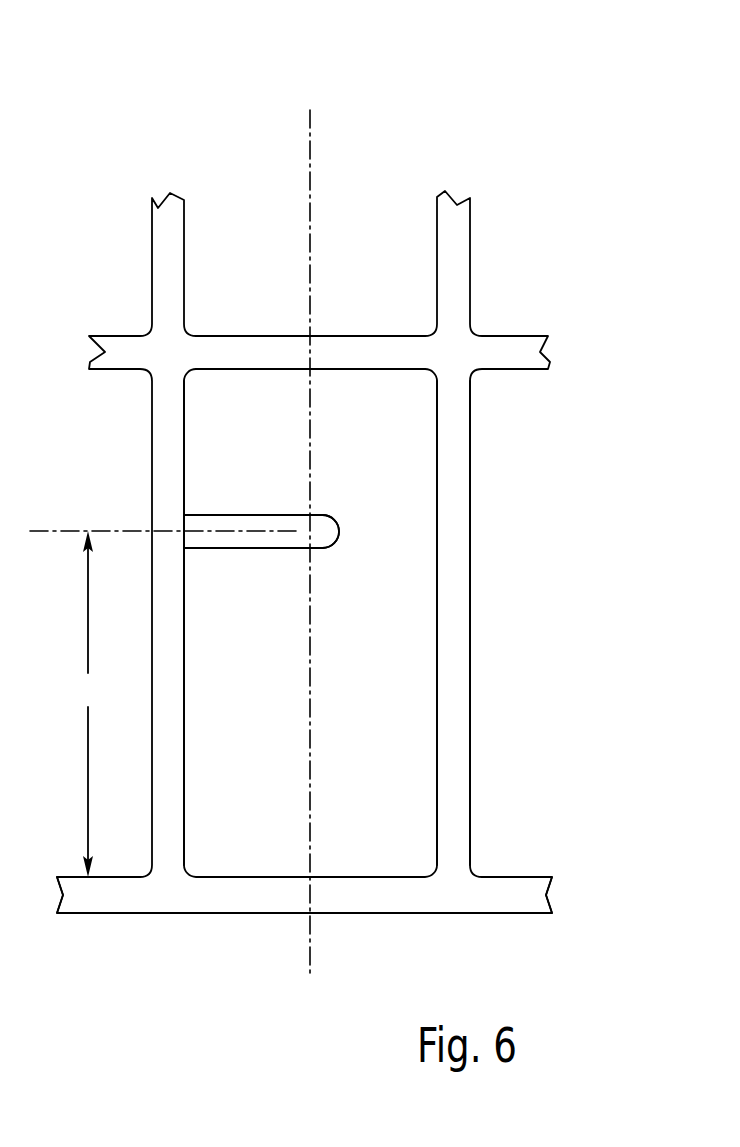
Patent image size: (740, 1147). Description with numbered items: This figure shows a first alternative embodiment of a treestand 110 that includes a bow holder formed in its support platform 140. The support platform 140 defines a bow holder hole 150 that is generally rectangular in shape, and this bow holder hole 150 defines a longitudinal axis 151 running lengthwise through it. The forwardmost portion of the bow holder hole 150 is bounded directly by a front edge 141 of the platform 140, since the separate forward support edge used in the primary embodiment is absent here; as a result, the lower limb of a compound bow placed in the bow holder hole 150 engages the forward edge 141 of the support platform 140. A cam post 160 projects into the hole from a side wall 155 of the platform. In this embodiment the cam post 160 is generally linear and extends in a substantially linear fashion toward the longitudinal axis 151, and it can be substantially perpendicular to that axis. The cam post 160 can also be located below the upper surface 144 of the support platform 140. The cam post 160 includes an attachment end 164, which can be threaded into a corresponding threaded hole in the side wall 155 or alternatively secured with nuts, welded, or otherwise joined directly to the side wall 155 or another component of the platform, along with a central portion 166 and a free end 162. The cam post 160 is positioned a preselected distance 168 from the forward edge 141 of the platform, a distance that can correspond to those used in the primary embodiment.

The treestand 110 is at (473, 143).
The support platform 140 is at (472, 535).
The front edge of the platform 141 is at (200, 895).
The upper surface of the support platform 144 is at (443, 352).
The bow holder hole 150 is at (388, 673).
The longitudinal axis 151 is at (310, 218).
The side wall 155 is at (184, 682).
The cam post 160 is at (254, 549).
The free end 162 is at (340, 530).
The attachment end 164 is at (184, 514).
The central portion 166 is at (275, 522).
The preselected distance 168 is at (165, 704).